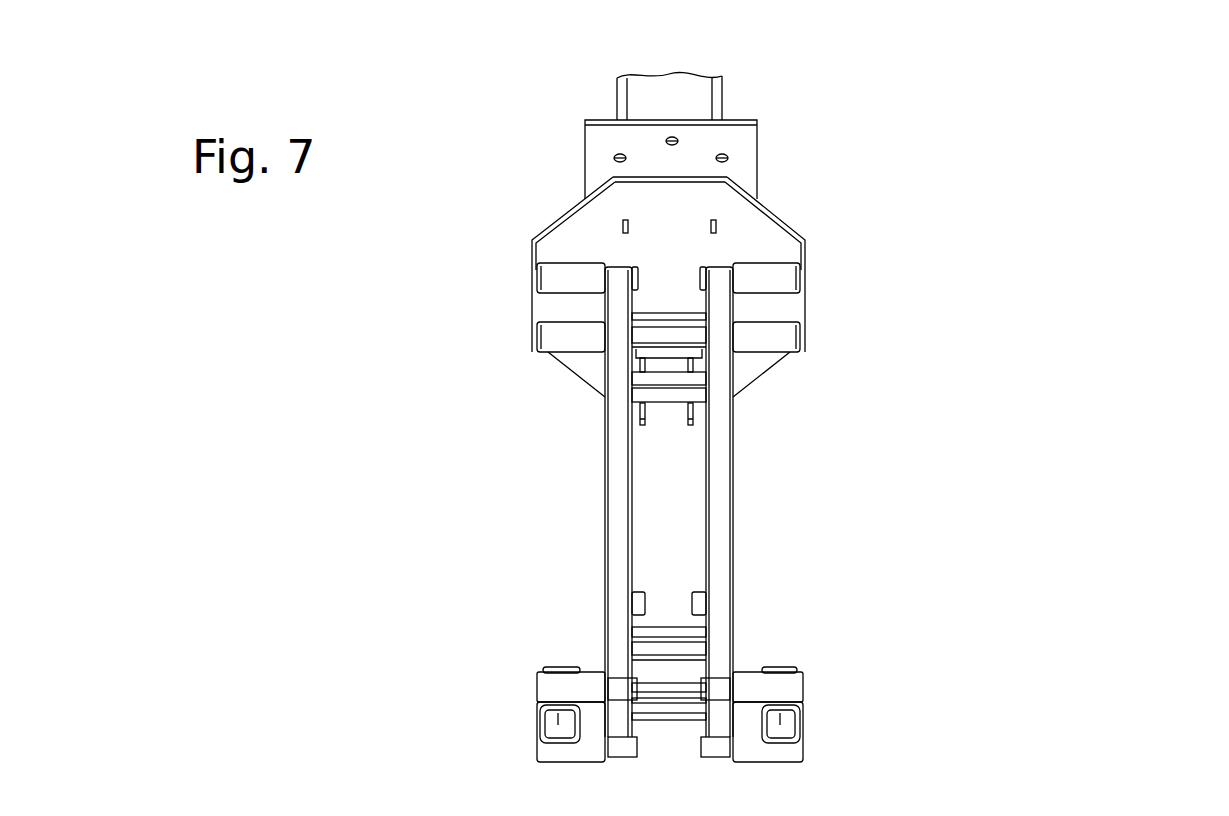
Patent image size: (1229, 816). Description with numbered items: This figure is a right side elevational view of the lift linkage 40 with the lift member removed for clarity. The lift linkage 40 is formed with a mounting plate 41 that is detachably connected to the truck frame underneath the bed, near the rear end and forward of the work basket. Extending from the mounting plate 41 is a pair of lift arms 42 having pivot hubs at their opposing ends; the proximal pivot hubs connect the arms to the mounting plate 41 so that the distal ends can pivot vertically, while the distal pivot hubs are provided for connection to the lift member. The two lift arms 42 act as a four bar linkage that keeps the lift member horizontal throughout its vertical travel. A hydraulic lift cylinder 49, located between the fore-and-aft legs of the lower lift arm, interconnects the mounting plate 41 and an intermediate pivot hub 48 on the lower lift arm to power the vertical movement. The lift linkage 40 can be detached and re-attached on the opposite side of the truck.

The lift linkage 40 is at (967, 188).
The mounting plate 41 is at (750, 245).
The lift arm 42 is at (715, 445).
The intermediate pivot hub 48 is at (642, 605).
The hydraulic lift cylinder 49 is at (673, 488).